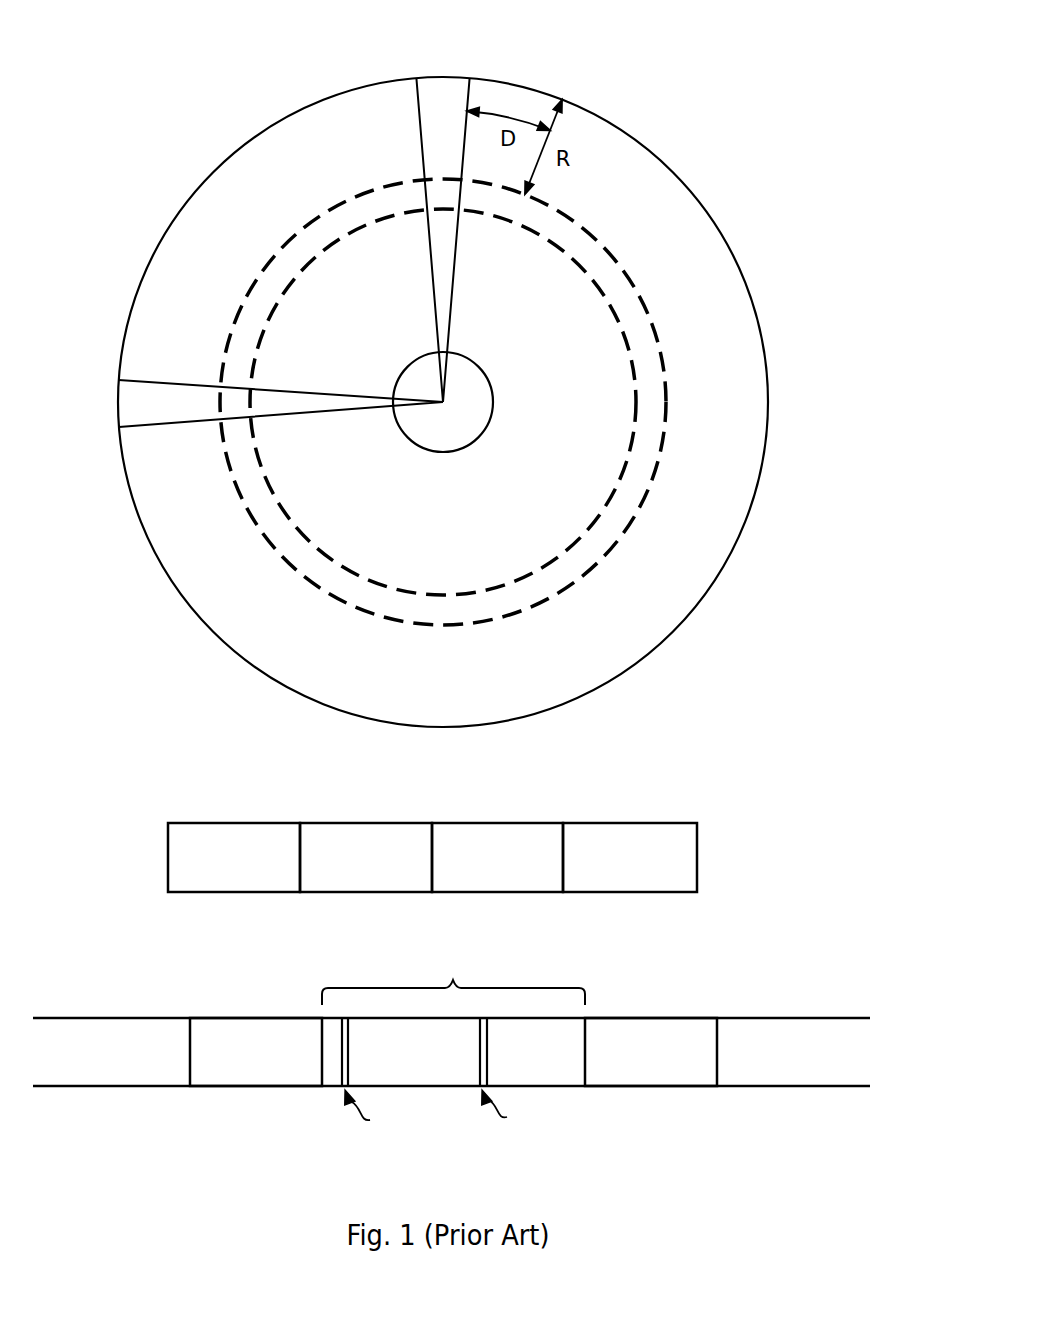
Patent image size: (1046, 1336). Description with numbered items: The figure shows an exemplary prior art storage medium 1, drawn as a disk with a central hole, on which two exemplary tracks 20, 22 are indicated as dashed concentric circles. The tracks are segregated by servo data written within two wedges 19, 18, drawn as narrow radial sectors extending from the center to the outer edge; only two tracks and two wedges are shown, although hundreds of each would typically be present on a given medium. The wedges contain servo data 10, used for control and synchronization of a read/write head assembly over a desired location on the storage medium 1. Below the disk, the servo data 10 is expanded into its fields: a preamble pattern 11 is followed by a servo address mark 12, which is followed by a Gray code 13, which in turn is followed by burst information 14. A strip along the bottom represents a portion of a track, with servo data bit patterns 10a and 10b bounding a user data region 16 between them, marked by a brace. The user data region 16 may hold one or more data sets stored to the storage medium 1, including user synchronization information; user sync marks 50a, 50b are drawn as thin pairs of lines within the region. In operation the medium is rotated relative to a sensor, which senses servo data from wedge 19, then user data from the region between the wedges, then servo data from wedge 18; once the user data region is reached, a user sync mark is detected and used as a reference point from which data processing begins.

The storage medium 1 is at (98, 128).
The wedge 18 is at (448, 77).
The wedge 19 is at (118, 398).
The track 20 is at (603, 283).
The track 22 is at (589, 228).
The servo data 10 is at (432, 821).
The preamble pattern 11 is at (234, 857).
The servo address mark 12 is at (366, 857).
The Gray code 13 is at (497, 857).
The burst information 14 is at (630, 857).
The user data region 16 is at (400, 952).
The servo data bit pattern 10a is at (256, 1052).
The servo data bit pattern 10b is at (651, 1052).
The user sync mark 50a is at (318, 1138).
The user sync mark 50b is at (572, 1140).